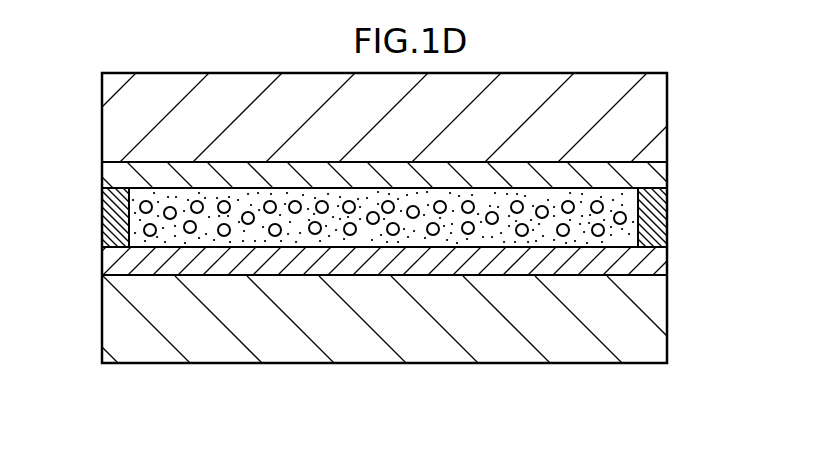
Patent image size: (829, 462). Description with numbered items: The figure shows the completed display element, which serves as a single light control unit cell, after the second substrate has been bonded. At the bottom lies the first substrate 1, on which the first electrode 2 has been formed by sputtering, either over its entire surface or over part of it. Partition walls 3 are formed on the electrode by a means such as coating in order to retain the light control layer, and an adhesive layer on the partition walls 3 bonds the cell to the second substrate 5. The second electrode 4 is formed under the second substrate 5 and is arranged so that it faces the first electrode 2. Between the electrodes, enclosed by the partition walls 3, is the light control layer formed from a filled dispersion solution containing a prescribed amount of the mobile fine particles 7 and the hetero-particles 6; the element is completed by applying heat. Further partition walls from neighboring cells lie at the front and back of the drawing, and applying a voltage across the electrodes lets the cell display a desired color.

The first substrate 1 is at (663, 330).
The first electrode 2 is at (662, 262).
The partition walls 3 is at (102, 213).
The second electrode 4 is at (662, 170).
The second substrate 5 is at (102, 118).
The hetero-particles 6 is at (146, 200).
The mobile fine particles 7 is at (620, 203).